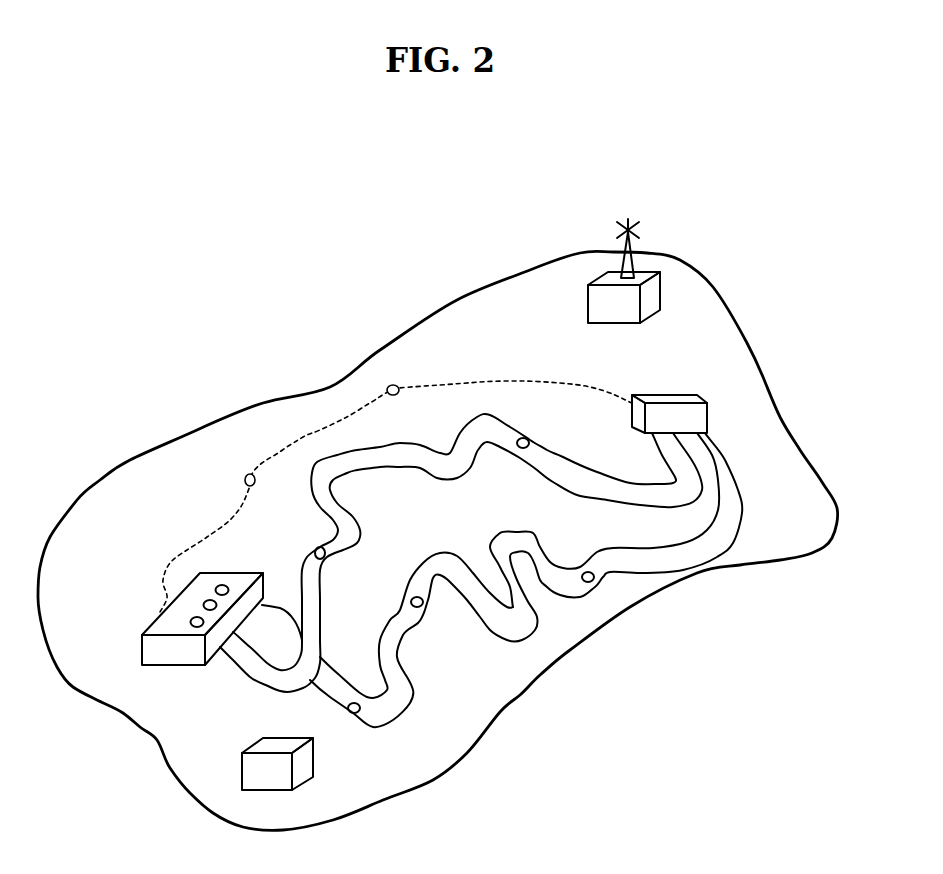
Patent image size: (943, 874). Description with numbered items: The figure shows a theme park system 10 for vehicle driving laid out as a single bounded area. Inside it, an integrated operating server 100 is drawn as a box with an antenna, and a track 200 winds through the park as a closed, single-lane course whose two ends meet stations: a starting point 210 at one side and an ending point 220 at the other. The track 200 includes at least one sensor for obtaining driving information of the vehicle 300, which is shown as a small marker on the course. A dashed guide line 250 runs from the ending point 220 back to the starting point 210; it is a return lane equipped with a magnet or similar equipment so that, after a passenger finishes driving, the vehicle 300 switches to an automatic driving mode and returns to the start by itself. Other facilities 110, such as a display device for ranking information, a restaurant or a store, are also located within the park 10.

The theme park system for vehicle driving 10 is at (101, 281).
The integrated operating server 100 is at (588, 307).
The other facilities 110 is at (242, 773).
The track 200 is at (317, 462).
The starting point 210 is at (160, 613).
The ending point 220 is at (672, 403).
The guide line 250 is at (508, 380).
The vehicle 300 is at (388, 388).